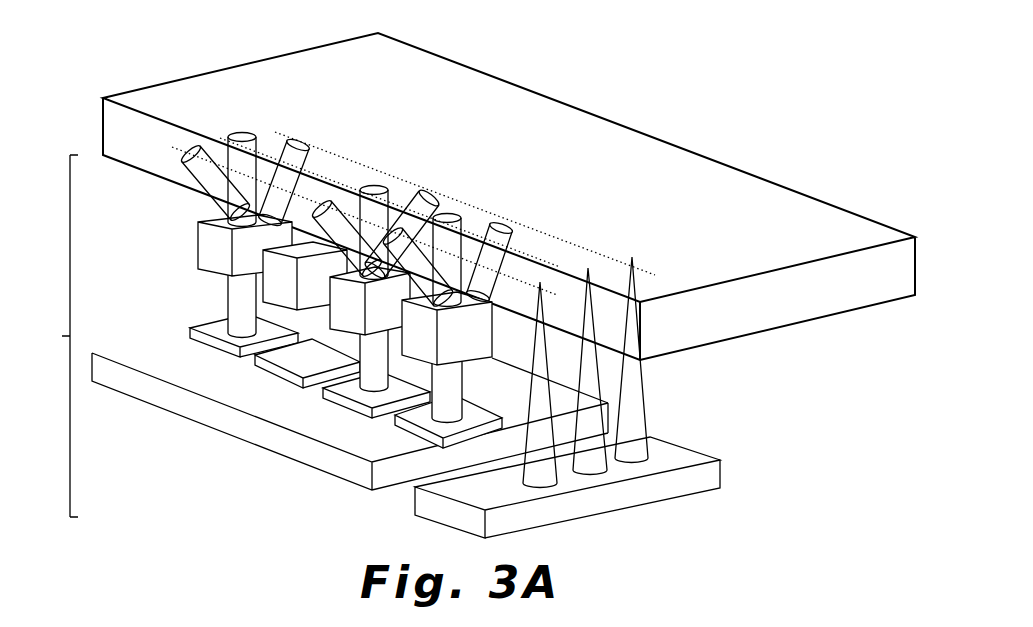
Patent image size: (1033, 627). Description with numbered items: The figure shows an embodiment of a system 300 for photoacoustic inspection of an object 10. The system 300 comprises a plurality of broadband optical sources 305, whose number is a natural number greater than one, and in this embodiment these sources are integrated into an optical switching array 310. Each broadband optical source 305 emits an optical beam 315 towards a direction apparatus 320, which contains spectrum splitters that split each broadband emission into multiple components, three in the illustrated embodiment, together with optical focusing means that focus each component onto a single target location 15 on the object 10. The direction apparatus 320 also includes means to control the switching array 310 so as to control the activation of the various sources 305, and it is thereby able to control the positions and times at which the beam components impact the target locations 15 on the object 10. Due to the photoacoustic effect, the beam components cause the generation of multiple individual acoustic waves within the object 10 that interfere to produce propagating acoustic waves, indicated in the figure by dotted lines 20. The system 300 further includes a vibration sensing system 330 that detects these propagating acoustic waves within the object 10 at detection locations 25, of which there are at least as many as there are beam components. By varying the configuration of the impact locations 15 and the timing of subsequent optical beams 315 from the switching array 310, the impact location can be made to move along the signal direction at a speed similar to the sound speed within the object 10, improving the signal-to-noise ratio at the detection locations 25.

The object 10 is at (818, 235).
The target locations 15 is at (196, 150).
The propagating acoustic waves 20 is at (385, 175).
The detection locations 25 is at (590, 265).
The system 300 is at (48, 336).
The broadband optical sources 305 is at (207, 337).
The optical switching array 310 is at (252, 428).
The optical beams 315 is at (243, 293).
The direction apparatus 320 is at (218, 243).
The vibration sensing system 330 is at (635, 493).